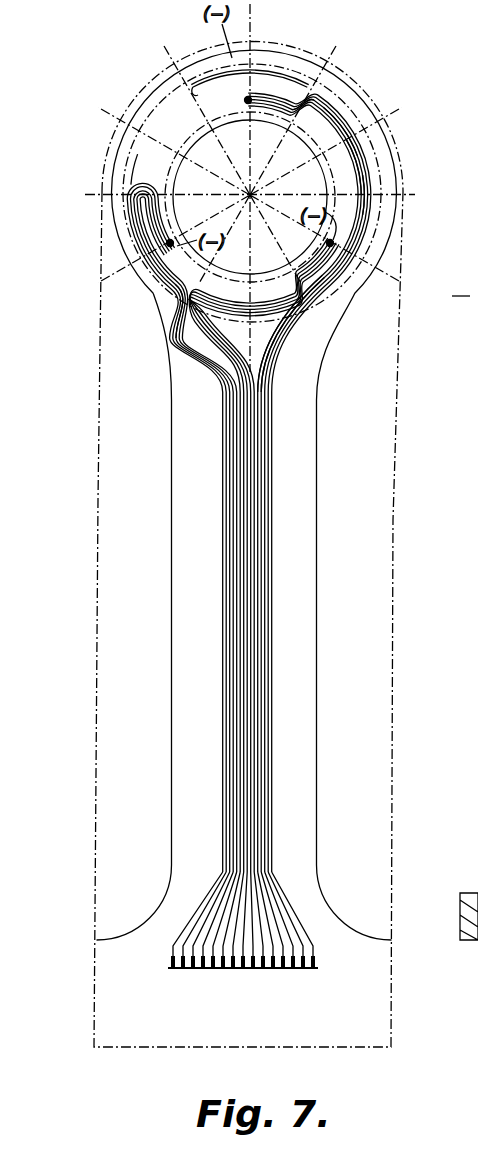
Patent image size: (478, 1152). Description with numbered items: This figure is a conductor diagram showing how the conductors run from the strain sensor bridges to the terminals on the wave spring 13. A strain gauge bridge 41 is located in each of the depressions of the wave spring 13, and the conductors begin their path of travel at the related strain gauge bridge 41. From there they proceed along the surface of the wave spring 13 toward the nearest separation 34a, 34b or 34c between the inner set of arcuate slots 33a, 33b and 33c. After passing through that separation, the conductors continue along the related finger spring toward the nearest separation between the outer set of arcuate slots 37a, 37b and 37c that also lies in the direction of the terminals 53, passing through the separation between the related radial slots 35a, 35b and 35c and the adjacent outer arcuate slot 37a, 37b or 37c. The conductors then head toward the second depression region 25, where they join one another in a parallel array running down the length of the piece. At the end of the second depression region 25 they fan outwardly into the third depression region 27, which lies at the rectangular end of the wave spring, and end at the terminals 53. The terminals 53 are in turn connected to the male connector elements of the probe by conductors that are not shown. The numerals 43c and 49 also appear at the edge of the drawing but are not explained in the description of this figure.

The wave spring 13 is at (187, 133).
The second depression region 25 is at (300, 744).
The third depression region 27 is at (380, 1017).
The inner arcuate slot 33a is at (355, 168).
The inner arcuate slot 33b is at (233, 297).
The inner arcuate slot 33c is at (180, 90).
The separation 34a is at (327, 302).
The separation 34b is at (135, 182).
The separation 34c is at (318, 95).
The radial slot 35a is at (377, 190).
The radial slot 35b is at (193, 330).
The radial slot 35c is at (192, 86).
The outer arcuate slot 37a is at (333, 305).
The outer arcuate slot 37b is at (135, 165).
The outer arcuate slot 37c is at (343, 116).
The strain gauge bridge 41 is at (250, 98).
The lead 43c is at (459, 325).
The lead 49 is at (465, 650).
The terminals 53 is at (176, 975).